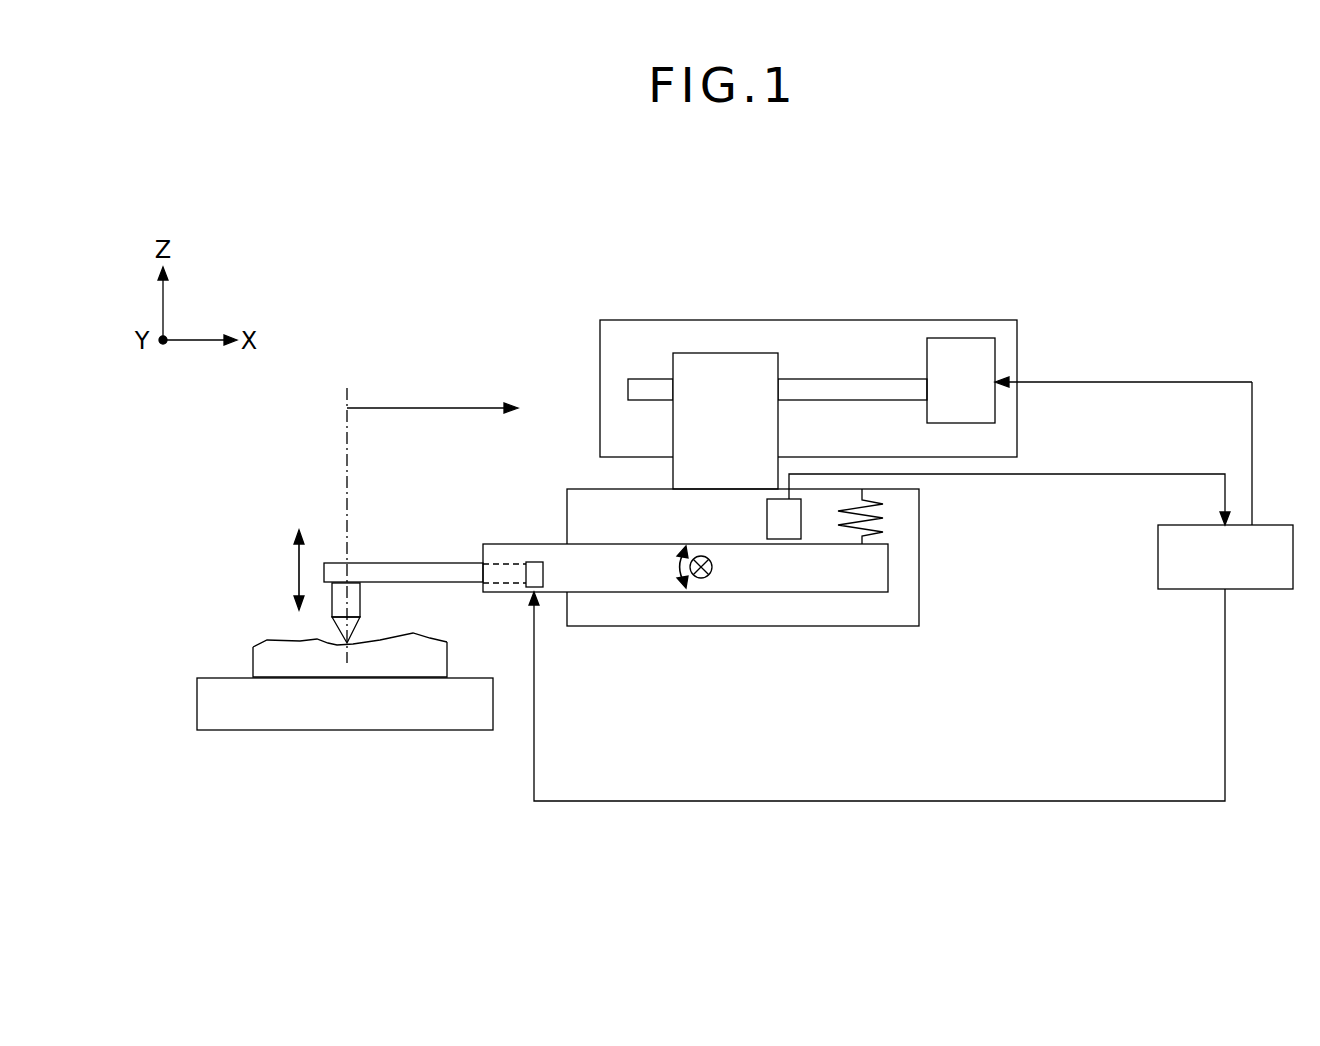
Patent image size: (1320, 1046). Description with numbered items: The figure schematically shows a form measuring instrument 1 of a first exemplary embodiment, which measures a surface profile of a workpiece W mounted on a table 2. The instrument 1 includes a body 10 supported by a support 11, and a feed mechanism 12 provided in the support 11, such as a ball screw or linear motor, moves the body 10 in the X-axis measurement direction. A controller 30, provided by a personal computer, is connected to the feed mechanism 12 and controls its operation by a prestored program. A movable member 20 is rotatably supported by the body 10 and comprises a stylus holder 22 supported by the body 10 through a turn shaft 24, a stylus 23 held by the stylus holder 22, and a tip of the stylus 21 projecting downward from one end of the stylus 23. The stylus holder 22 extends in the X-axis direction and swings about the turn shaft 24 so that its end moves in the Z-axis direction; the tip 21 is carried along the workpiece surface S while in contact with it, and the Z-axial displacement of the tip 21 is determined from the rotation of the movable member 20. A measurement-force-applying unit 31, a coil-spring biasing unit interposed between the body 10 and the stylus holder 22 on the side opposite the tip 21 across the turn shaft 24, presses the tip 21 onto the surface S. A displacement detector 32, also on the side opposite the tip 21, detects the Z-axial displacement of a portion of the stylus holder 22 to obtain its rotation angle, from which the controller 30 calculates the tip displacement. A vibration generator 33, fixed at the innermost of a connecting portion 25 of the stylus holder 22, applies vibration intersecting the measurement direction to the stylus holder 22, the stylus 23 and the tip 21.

The form measuring instrument 1 is at (506, 186).
The table 2 is at (197, 703).
The body 10 is at (886, 681).
The support 11 is at (762, 278).
The feed mechanism 12 is at (878, 382).
The movable member 20 is at (780, 612).
The tip of the stylus 21 is at (337, 623).
The stylus holder 22 is at (635, 582).
The stylus 23 is at (392, 563).
The turn shaft 24 is at (713, 570).
The connecting portion 25 is at (512, 587).
The controller 30 is at (1182, 590).
The measurement-force-applying unit 31 is at (880, 508).
The displacement detector 32 is at (787, 533).
The vibration generator 33 is at (537, 562).
The workpiece W is at (253, 662).
The workpiece surface S is at (260, 643).